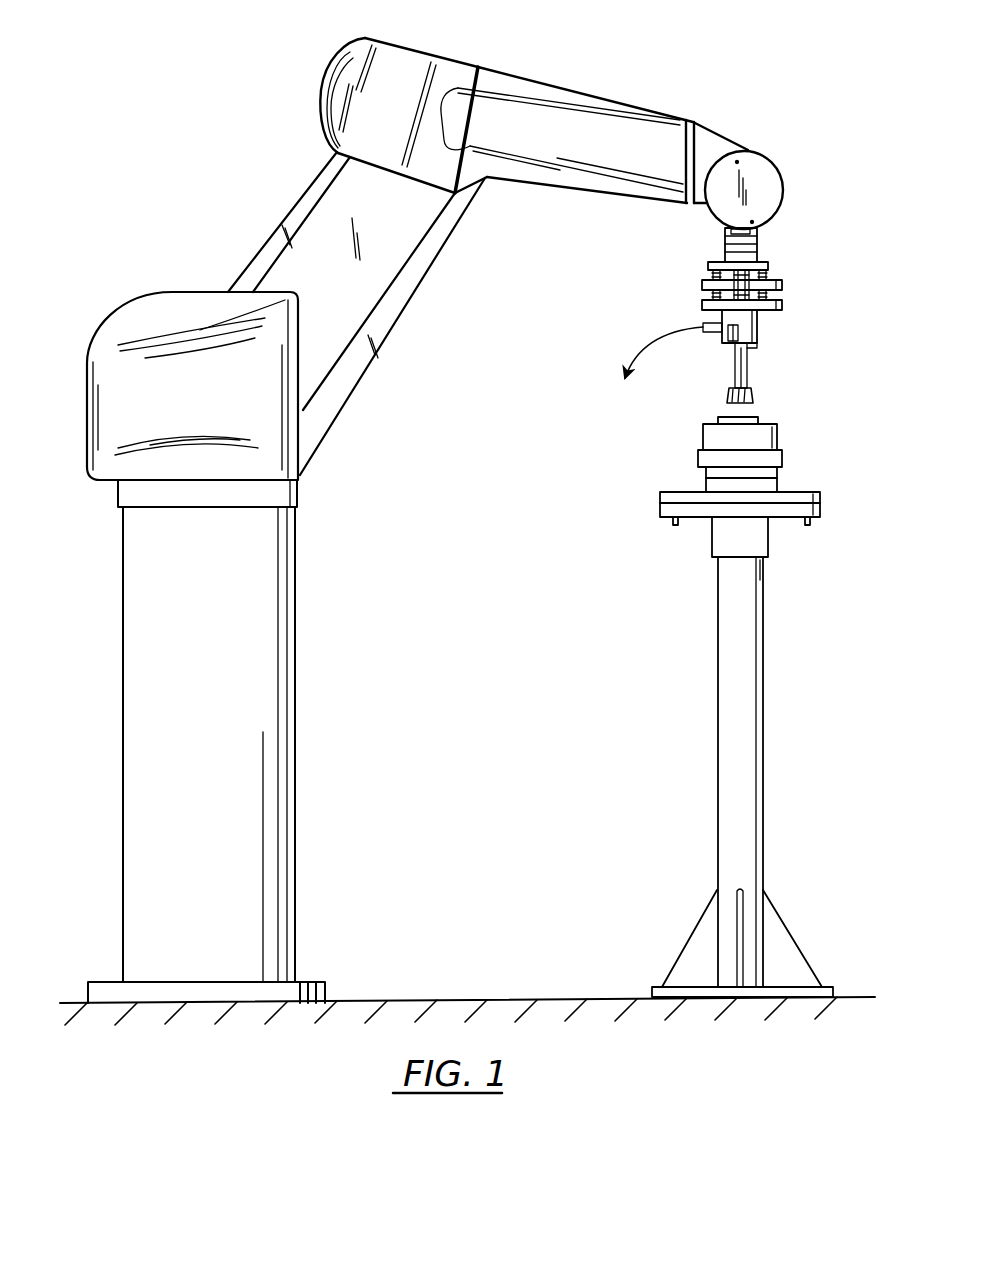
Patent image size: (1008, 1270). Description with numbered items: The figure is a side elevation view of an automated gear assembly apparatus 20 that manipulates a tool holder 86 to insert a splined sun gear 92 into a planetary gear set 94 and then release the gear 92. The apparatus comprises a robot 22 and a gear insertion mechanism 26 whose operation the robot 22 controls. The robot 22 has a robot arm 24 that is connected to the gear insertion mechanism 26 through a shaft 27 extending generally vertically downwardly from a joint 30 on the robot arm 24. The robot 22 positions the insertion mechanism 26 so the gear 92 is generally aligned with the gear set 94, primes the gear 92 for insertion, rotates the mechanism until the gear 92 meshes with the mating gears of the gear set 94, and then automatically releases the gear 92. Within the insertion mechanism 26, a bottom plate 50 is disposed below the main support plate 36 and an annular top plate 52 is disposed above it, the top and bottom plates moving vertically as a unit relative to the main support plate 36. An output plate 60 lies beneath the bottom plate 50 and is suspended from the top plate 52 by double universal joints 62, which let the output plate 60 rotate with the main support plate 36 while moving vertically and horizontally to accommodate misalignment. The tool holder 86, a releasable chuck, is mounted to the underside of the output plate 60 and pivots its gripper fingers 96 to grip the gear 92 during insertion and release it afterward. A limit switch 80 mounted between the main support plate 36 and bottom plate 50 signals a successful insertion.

The automated gear assembly apparatus 20 is at (252, 135).
The robot 22 is at (150, 295).
The robot arm 24 is at (633, 52).
The gear insertion mechanism 26 is at (823, 285).
The shaft 27 is at (757, 247).
The joint 30 is at (770, 190).
The main support plate 36 is at (705, 283).
The bottom plate 50 is at (703, 307).
The annular top plate 52 is at (708, 265).
The output plate 60 is at (755, 305).
The double universal joints 62 is at (748, 308).
The limit switch 80 is at (785, 290).
The tool holder 86 is at (720, 340).
The splined sun gear 92 is at (753, 392).
The planetary gear set 94 is at (763, 420).
The gripper fingers 96 is at (760, 322).